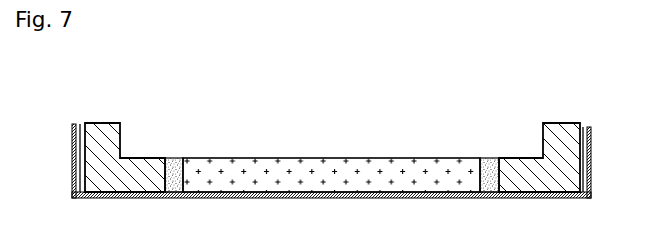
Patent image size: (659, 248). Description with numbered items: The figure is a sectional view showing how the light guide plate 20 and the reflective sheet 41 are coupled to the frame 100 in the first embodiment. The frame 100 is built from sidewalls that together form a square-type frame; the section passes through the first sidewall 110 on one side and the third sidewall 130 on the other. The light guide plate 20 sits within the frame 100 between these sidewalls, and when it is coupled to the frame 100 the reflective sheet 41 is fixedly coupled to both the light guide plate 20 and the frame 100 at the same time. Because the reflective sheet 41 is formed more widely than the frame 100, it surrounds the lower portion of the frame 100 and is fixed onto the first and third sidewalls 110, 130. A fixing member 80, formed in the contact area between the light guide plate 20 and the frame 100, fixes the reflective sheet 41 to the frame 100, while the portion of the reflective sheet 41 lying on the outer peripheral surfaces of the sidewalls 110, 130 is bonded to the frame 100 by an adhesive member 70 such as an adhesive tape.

The frame 100 is at (557, 107).
The light guide plate 20 is at (333, 163).
The reflective sheet 41 is at (332, 198).
The adhesive member 70 is at (79, 124).
The fixing member 80 is at (490, 163).
The first sidewall 110 is at (93, 162).
The third sidewall 130 is at (572, 157).